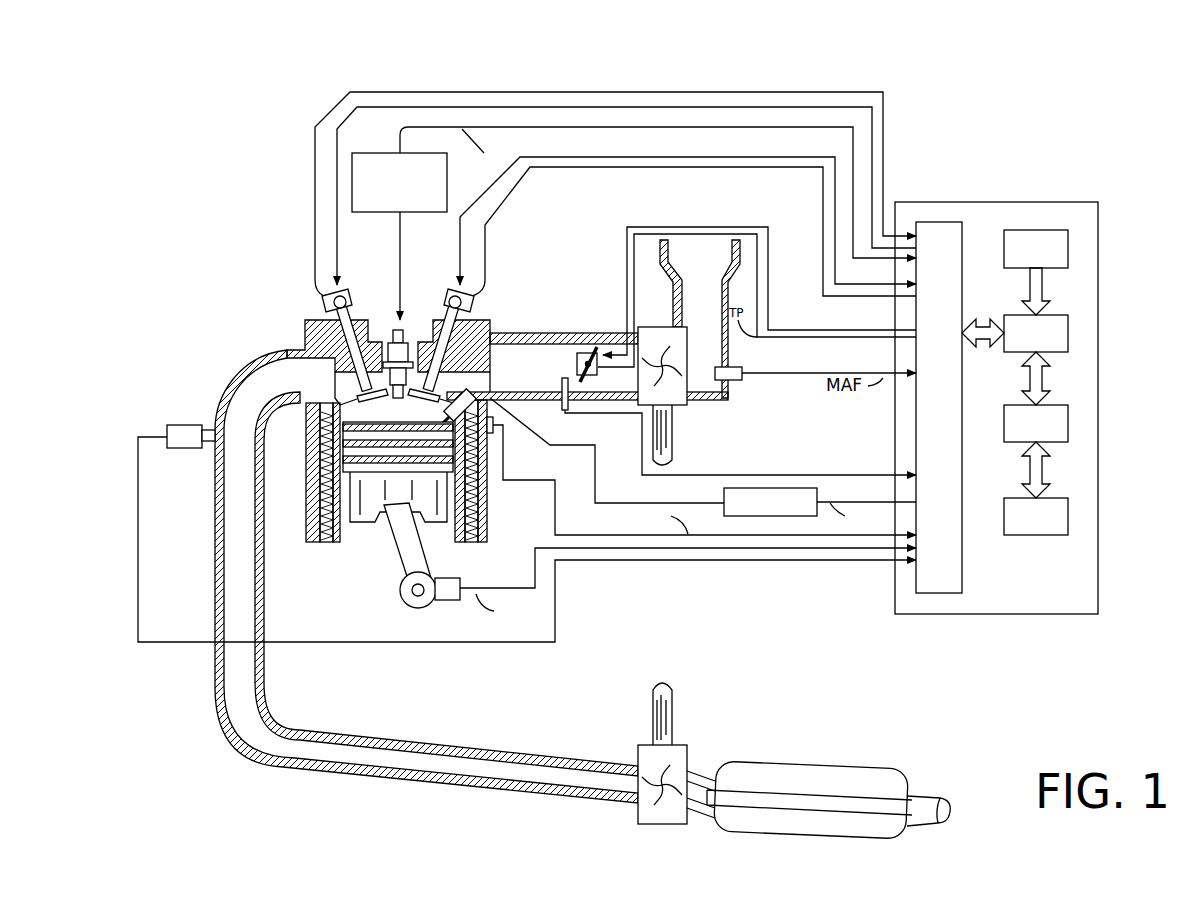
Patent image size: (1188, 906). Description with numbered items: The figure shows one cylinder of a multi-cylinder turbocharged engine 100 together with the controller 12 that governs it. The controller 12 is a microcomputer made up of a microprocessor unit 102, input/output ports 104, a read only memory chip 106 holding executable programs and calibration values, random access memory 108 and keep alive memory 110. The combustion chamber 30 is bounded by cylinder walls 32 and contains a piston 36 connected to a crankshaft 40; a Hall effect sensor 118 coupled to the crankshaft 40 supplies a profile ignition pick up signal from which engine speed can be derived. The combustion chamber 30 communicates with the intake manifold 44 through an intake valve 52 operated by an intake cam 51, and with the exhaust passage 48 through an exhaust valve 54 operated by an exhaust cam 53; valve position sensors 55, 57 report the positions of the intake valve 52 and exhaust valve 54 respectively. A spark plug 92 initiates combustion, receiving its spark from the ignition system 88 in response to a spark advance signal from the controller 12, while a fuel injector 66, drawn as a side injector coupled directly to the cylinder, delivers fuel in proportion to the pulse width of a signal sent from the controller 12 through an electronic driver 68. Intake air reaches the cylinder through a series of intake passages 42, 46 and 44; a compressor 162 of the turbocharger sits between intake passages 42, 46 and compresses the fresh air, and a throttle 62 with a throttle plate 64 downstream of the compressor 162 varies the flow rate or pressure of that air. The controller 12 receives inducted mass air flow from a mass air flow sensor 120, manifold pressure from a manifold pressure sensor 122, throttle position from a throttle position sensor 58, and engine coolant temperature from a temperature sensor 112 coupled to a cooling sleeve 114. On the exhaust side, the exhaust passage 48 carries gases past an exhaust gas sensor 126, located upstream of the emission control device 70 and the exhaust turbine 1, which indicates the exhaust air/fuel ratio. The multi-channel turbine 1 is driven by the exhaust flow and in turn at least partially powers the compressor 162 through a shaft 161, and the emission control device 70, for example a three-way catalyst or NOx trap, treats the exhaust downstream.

The engine 100 is at (252, 276).
The controller 12 is at (1098, 203).
The input/output ports 104 is at (962, 232).
The read only memory chip 106 is at (1068, 247).
The microprocessor unit 102 is at (1068, 336).
The random access memory 108 is at (1068, 425).
The keep alive memory 110 is at (1068, 518).
The ignition system 88 is at (370, 153).
The exhaust passage 48 is at (290, 386).
The exhaust valve 54 is at (345, 362).
The intake valve 52 is at (432, 381).
The valve position sensor 57 is at (324, 306).
The exhaust cam 53 is at (346, 288).
The valve position sensor 55 is at (470, 309).
The intake cam 51 is at (448, 290).
The spark plug 92 is at (402, 323).
The intake manifold 44 is at (525, 374).
The intake passage 42 is at (710, 298).
The intake passage 46 is at (627, 390).
The throttle position sensor 58 is at (598, 353).
The throttle plate 64 is at (588, 348).
The throttle 62 is at (578, 372).
The manifold pressure sensor 122 is at (563, 379).
The compressor 162 is at (668, 327).
The shaft 161 is at (675, 450).
The mass air flow sensor 120 is at (740, 368).
The combustion chamber 30 is at (398, 407).
The cooling sleeve 114 is at (478, 512).
The fuel injector 66 is at (490, 401).
The temperature sensor 112 is at (493, 434).
The piston 36 is at (383, 513).
The cylinder walls 32 is at (348, 534).
The crankshaft 40 is at (410, 608).
The Hall effect sensor 118 is at (440, 602).
The exhaust gas sensor 126 is at (167, 430).
The electronic driver 68 is at (735, 517).
The exhaust turbine 1 is at (645, 746).
The emission control device 70 is at (725, 831).